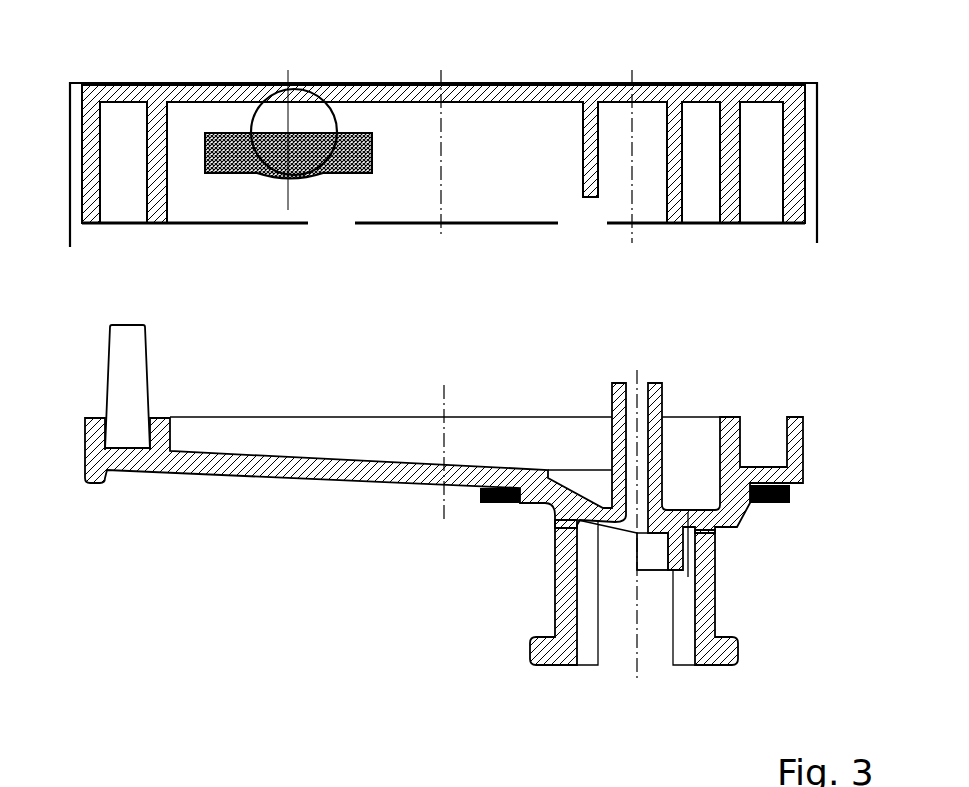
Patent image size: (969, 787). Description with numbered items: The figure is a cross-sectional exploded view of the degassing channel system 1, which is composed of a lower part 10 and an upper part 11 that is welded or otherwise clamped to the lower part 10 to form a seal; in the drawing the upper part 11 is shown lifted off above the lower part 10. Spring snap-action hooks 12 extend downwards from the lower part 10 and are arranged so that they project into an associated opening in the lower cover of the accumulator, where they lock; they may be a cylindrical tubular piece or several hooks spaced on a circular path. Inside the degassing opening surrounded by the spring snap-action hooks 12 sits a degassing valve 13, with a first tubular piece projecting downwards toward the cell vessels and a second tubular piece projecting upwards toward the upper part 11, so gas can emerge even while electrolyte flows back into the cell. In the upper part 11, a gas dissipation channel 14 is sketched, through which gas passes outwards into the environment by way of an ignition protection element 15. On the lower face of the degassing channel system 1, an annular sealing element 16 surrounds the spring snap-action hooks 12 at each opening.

The degassing channel system 1 is at (163, 607).
The lower part 10 is at (93, 387).
The upper part 11 is at (94, 253).
The spring snap-action hooks 12 is at (715, 613).
The degassing valve 13 is at (667, 577).
The gas dissipation channel 14 is at (301, 105).
The ignition protection element 15 is at (220, 133).
The annular sealing element 16 is at (493, 507).